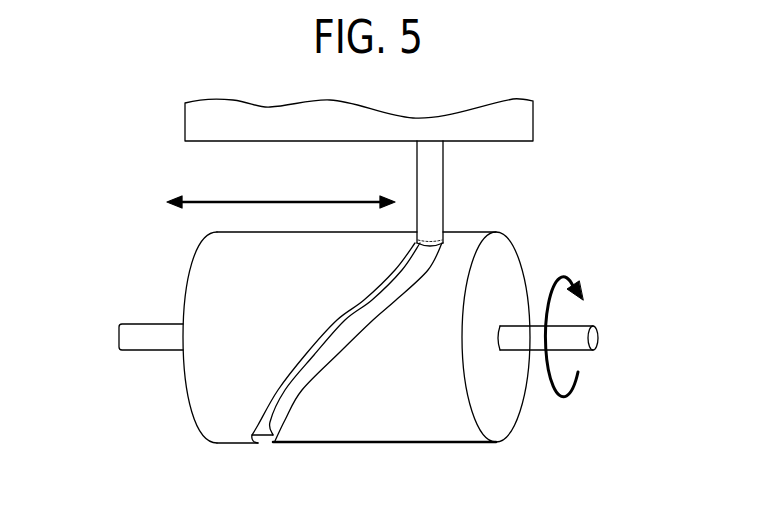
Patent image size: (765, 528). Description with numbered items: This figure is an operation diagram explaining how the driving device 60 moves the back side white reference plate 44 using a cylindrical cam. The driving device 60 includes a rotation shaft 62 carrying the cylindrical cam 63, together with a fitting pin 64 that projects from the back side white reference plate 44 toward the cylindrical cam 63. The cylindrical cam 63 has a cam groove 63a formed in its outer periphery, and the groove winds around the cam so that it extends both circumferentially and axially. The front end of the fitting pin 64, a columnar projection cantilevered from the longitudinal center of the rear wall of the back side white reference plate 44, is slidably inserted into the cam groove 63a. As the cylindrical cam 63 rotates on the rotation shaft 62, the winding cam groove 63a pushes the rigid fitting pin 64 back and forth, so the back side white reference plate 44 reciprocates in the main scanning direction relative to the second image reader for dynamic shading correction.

The back side white reference plate 44 is at (527, 130).
The fitting pin 64 is at (432, 190).
The driving device 60 is at (530, 418).
The rotation shaft 62 is at (148, 336).
The cylindrical cam 63 is at (392, 428).
The cam groove 63a is at (273, 428).